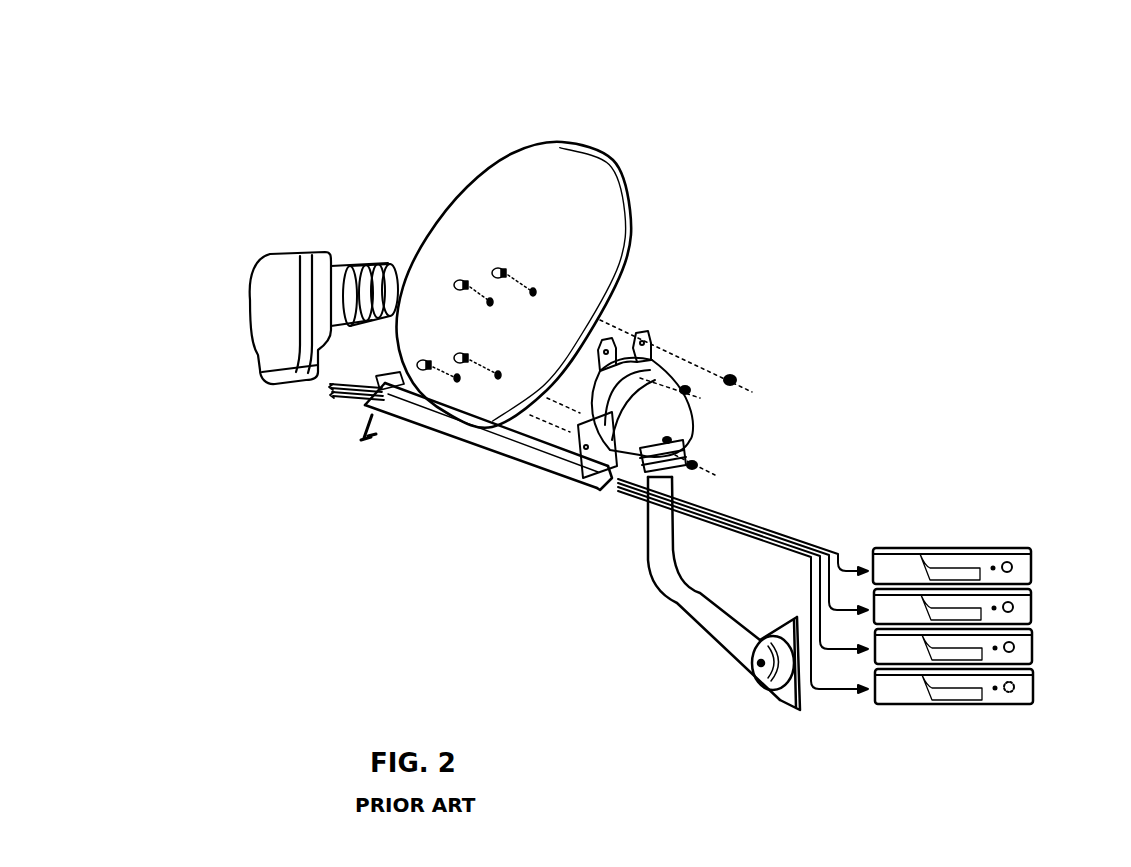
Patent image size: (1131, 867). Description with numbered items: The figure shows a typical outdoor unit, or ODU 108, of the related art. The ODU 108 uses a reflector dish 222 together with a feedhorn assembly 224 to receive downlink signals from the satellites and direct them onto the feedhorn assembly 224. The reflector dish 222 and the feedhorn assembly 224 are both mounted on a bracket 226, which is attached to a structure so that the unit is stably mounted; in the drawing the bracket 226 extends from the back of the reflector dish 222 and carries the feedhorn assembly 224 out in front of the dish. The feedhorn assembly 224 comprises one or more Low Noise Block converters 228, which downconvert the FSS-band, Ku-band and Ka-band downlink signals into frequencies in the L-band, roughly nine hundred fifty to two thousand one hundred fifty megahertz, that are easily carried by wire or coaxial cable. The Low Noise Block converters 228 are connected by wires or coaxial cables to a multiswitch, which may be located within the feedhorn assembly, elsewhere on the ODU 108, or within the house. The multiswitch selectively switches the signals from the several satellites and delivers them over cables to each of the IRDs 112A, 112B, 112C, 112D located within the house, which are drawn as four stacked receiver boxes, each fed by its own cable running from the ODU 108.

The ODU 108 is at (617, 77).
The reflector dish 222 is at (470, 172).
The feedhorn assembly 224 is at (290, 247).
The Low Noise Block converter 228 is at (349, 254).
The bracket 226 is at (531, 480).
The IRD 112A is at (982, 547).
The IRD 112B is at (1034, 605).
The IRD 112C is at (1038, 649).
The IRD 112D is at (1038, 693).